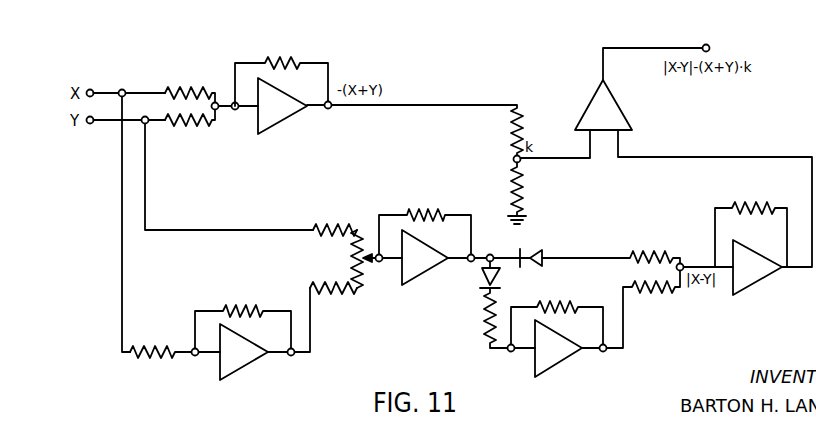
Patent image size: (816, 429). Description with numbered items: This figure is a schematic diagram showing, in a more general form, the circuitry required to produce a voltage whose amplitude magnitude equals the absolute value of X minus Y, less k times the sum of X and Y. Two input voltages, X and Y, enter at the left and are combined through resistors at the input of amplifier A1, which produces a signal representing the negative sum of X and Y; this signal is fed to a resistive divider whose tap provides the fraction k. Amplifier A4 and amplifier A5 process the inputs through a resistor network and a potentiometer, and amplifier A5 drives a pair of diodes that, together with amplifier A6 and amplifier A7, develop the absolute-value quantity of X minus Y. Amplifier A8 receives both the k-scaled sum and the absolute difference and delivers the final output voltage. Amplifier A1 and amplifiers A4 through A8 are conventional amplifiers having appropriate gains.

The amplifier A1 is at (281, 95).
The amplifier A4 is at (243, 342).
The amplifier A5 is at (425, 247).
The amplifier A6 is at (557, 339).
The amplifier A7 is at (751, 248).
The amplifier A8 is at (642, 88).